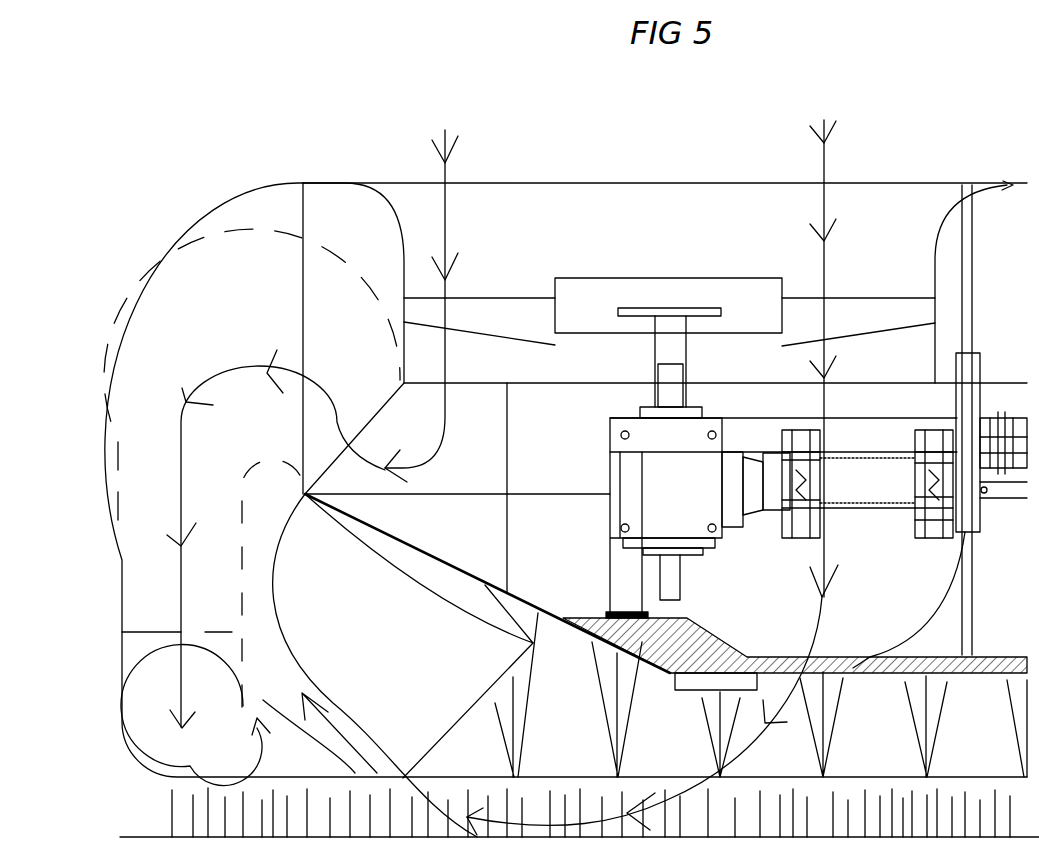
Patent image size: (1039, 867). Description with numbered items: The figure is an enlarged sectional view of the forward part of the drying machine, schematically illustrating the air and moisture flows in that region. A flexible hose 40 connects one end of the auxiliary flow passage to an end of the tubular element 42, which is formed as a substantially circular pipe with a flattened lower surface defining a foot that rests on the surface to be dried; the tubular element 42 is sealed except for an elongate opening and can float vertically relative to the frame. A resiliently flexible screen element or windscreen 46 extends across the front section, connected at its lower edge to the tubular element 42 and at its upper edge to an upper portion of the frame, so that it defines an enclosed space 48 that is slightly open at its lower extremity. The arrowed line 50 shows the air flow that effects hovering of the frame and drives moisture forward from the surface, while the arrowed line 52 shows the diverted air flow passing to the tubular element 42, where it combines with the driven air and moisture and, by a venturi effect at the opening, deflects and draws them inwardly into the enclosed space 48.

The flexible hose 40 is at (137, 350).
The tubular element 42 is at (166, 714).
The screen element 46 is at (218, 212).
The enclosed space 48 is at (267, 437).
The arrowed line 50 is at (826, 213).
The arrowed line 52 is at (447, 220).